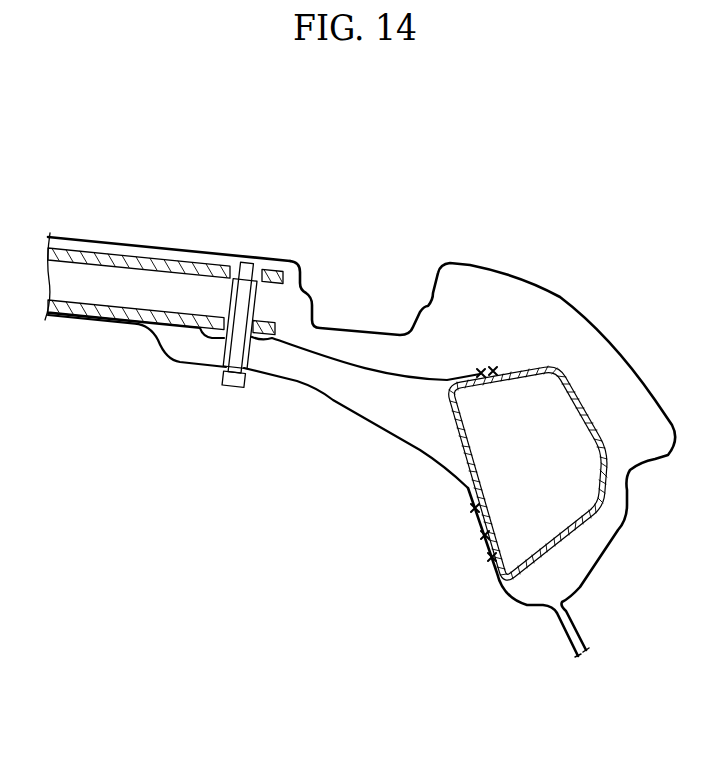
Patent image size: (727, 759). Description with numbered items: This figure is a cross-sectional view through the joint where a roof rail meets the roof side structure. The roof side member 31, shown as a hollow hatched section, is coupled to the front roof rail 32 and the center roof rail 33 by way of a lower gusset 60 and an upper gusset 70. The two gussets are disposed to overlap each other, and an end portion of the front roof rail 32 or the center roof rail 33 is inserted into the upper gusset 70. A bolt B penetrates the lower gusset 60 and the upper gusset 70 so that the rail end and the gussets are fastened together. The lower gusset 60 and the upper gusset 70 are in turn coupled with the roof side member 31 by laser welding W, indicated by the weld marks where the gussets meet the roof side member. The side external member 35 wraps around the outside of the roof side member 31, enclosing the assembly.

The front roof rail 32 is at (162, 262).
The center roof rail 33 is at (161, 254).
The upper gusset 70 is at (343, 363).
The lower gusset 60 is at (350, 410).
The side external member 35 is at (587, 322).
The roof side member 31 is at (578, 397).
The bolt B is at (236, 386).
The laser welding W is at (483, 371).